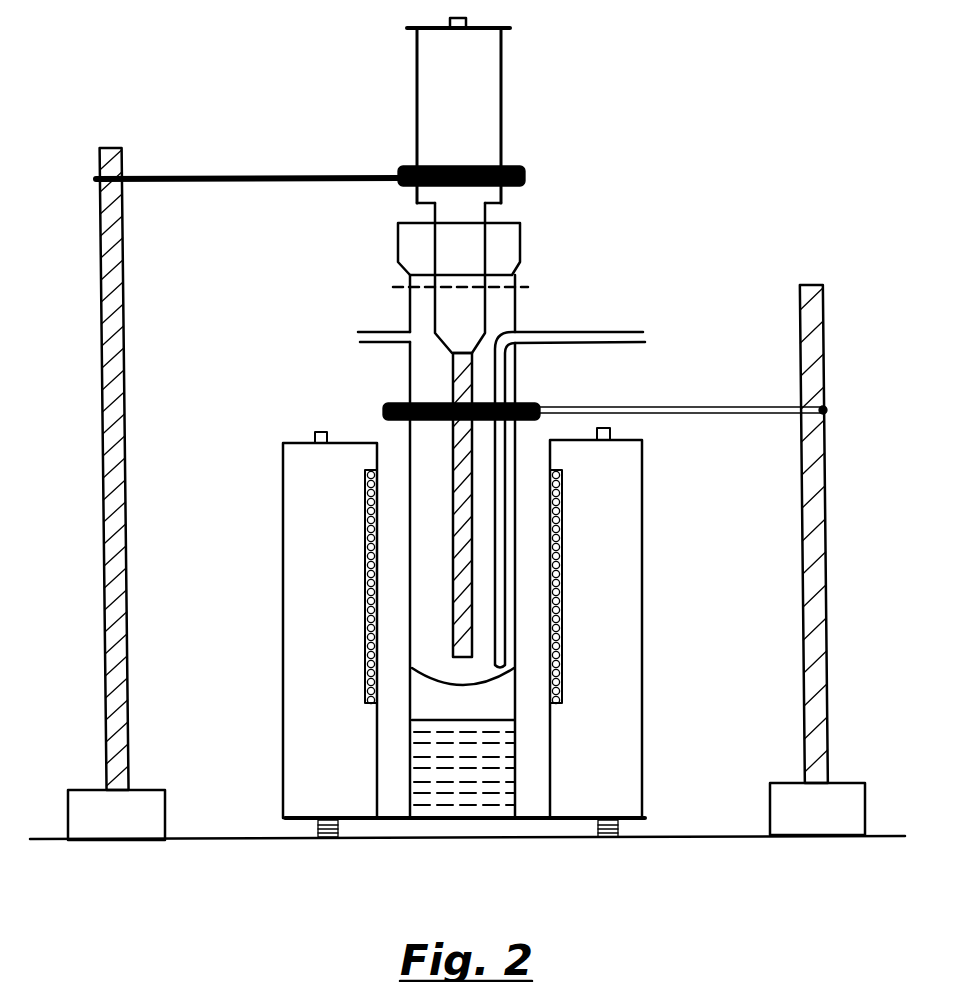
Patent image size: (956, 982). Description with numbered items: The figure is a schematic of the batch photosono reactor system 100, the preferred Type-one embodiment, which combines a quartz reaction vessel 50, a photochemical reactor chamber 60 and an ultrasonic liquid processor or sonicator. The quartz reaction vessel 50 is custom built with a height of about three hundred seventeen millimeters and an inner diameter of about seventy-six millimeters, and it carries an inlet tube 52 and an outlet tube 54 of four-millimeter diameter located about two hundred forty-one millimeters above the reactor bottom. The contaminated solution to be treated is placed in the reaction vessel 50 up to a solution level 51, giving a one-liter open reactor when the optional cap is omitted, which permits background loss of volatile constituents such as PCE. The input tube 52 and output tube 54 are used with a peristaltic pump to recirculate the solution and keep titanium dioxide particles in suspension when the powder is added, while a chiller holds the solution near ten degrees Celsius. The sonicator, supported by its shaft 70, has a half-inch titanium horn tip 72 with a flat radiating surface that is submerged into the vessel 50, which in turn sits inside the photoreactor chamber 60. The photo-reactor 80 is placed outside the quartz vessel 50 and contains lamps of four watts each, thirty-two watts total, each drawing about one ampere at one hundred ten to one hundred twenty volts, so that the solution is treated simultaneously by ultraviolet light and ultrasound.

The reactor system 100 is at (640, 178).
The shaft 70 is at (452, 212).
The quartz reaction vessel 50 is at (502, 243).
The solution level 51 is at (398, 287).
The inlet tube 52 is at (390, 340).
The outlet tube 54 is at (557, 333).
The sonicator horn tip 72 is at (462, 462).
The photochemical reactor chamber 60 is at (623, 485).
The photo-reactor 80 is at (365, 573).